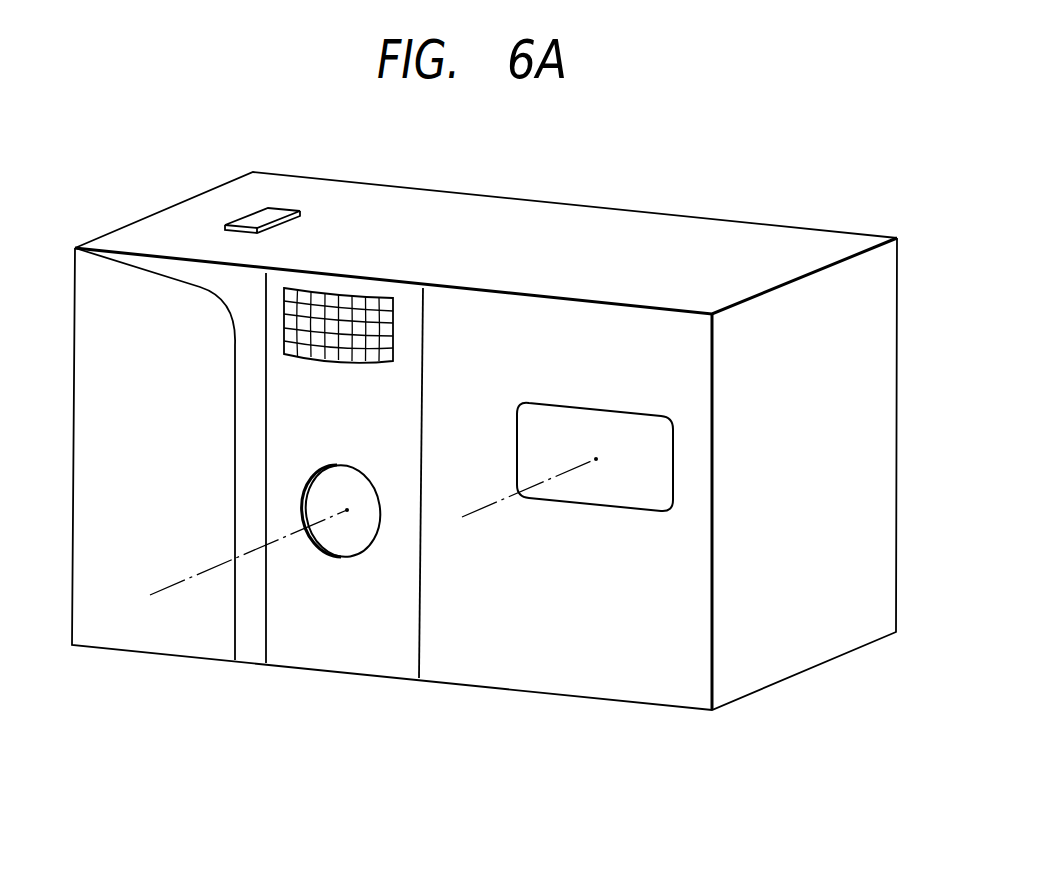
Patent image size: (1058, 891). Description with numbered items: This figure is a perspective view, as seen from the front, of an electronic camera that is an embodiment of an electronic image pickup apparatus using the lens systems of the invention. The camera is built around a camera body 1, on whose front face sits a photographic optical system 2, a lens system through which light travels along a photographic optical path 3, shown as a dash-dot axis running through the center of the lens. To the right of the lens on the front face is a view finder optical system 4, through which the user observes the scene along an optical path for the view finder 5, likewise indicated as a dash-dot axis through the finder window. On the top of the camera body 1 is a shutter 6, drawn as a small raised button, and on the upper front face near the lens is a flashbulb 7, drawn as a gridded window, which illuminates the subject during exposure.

The camera body 1 is at (768, 242).
The photographic optical system 2 is at (352, 541).
The photographic optical path 3 is at (177, 584).
The view finder optical system 4 is at (658, 469).
The optical path for the view finder 5 is at (461, 517).
The shutter 6 is at (265, 210).
The flashbulb 7 is at (350, 303).